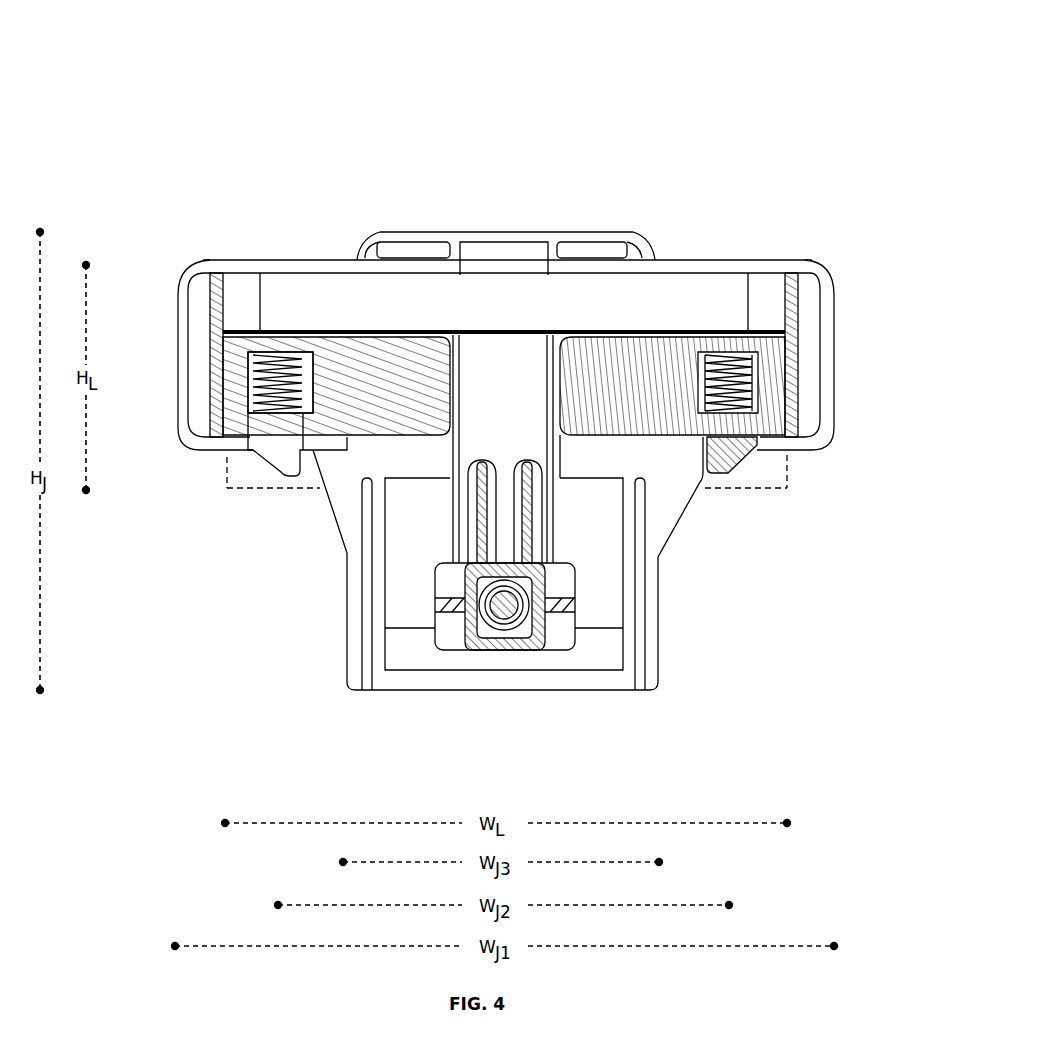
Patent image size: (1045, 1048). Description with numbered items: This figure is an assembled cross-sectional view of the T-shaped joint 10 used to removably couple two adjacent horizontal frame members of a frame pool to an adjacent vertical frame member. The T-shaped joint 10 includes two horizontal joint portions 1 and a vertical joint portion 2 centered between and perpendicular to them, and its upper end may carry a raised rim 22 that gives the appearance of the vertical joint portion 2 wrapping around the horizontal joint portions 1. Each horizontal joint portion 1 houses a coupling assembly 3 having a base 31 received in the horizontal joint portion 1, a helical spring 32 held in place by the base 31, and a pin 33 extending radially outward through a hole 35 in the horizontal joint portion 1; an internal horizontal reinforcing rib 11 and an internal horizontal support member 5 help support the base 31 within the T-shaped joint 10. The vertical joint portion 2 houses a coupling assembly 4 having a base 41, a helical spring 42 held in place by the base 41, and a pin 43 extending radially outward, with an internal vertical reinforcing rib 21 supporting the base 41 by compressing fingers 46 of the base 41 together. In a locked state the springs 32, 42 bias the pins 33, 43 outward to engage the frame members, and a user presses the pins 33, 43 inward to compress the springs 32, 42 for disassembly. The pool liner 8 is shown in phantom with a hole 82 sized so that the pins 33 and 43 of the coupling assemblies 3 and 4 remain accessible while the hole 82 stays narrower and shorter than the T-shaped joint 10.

The horizontal joint portion 1 is at (715, 265).
The vertical joint portion 2 is at (650, 670).
The coupling assembly 3 is at (202, 365).
The coupling assembly 4 is at (552, 632).
The internal horizontal support member 5 is at (485, 292).
The pool liner 8 is at (227, 468).
The T-shaped joint 10 is at (208, 221).
The internal horizontal reinforcing rib 11 is at (345, 335).
The internal vertical reinforcing rib 21 is at (553, 370).
The raised rim 22 is at (415, 232).
The base 31 is at (782, 368).
The helical spring 32 is at (755, 395).
The pin 33 is at (733, 458).
The hole 35 is at (768, 469).
The base 41 is at (470, 648).
The helical spring 42 is at (513, 627).
The pin 43 is at (504, 605).
The fingers 46 is at (542, 522).
The hole 82 is at (253, 490).